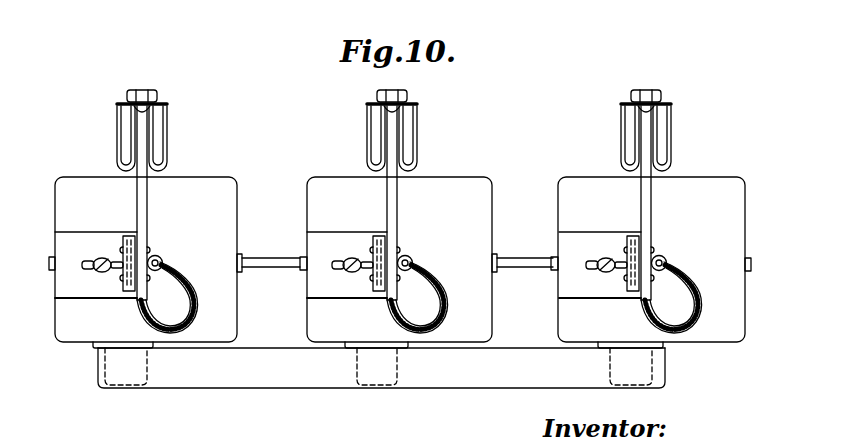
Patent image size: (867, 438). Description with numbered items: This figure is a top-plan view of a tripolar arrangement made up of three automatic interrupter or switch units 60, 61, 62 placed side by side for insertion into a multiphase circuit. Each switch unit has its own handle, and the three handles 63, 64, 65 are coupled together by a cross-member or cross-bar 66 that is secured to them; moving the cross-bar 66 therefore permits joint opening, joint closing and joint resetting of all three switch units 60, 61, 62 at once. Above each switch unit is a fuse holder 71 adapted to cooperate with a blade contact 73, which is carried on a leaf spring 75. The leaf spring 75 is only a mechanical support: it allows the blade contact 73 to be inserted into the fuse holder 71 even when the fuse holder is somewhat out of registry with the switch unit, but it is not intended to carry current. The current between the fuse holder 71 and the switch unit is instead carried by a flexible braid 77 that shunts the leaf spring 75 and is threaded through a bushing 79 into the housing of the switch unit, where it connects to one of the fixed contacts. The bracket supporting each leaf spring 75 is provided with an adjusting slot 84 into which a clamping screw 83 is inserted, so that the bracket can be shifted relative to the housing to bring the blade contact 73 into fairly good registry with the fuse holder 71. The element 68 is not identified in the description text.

The switch unit 60 is at (763, 125).
The switch unit 61 is at (518, 132).
The switch unit 62 is at (270, 132).
The handle 63 is at (640, 386).
The handle 64 is at (383, 375).
The handle 65 is at (127, 386).
The cross-member or cross-bar 66 is at (282, 380).
The connecting rod 68 is at (267, 262).
The fuse holder 71 is at (167, 127).
The blade contact 73 is at (138, 148).
The leaf spring 75 is at (103, 289).
The braid 77 is at (192, 298).
The bushing 79 is at (157, 257).
The clamping screw 83 is at (102, 258).
The adjusting slot 84 is at (83, 266).